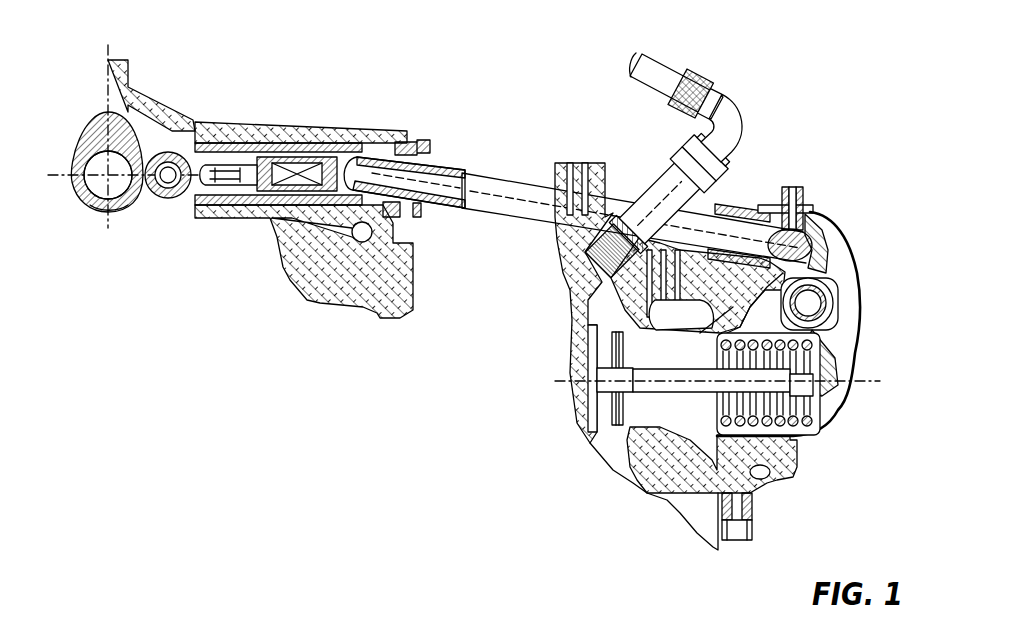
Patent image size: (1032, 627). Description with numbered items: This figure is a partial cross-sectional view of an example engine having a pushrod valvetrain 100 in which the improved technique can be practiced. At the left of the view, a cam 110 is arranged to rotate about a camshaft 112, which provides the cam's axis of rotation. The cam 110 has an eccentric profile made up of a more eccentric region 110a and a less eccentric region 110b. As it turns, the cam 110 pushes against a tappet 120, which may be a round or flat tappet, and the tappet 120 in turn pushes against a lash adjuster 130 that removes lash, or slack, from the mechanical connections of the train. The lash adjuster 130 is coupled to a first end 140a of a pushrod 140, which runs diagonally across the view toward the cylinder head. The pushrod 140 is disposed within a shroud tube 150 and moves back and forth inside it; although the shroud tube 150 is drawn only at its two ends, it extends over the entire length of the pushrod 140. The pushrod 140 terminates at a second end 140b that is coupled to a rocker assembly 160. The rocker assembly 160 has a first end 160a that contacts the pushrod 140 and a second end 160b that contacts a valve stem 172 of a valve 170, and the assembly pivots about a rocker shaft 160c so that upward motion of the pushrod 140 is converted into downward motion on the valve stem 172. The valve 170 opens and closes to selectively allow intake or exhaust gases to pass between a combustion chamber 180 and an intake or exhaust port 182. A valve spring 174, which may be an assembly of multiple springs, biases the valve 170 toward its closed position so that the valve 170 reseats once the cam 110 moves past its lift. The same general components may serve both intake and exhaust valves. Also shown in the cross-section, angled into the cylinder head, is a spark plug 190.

The pushrod valvetrain 100 is at (800, 48).
The cam 110 is at (109, 146).
The more eccentric region 110a is at (110, 142).
The less eccentric region 110b is at (113, 205).
The camshaft 112 is at (108, 174).
The tappet 120 is at (170, 148).
The lash adjuster 130 is at (290, 153).
The pushrod 140 is at (503, 197).
The first end 140a is at (356, 158).
The second end 140b is at (790, 250).
The shroud tube 150 is at (448, 164).
The rocker assembly 160 is at (817, 320).
The first end 160a is at (827, 272).
The second end 160b is at (833, 375).
The rocker shaft 160c is at (812, 306).
The valve 170 is at (596, 387).
The valve stem 172 is at (637, 384).
The valve spring 174 is at (768, 432).
The combustion chamber 180 is at (578, 315).
The intake or exhaust port 182 is at (650, 470).
The spark plug 190 is at (668, 191).